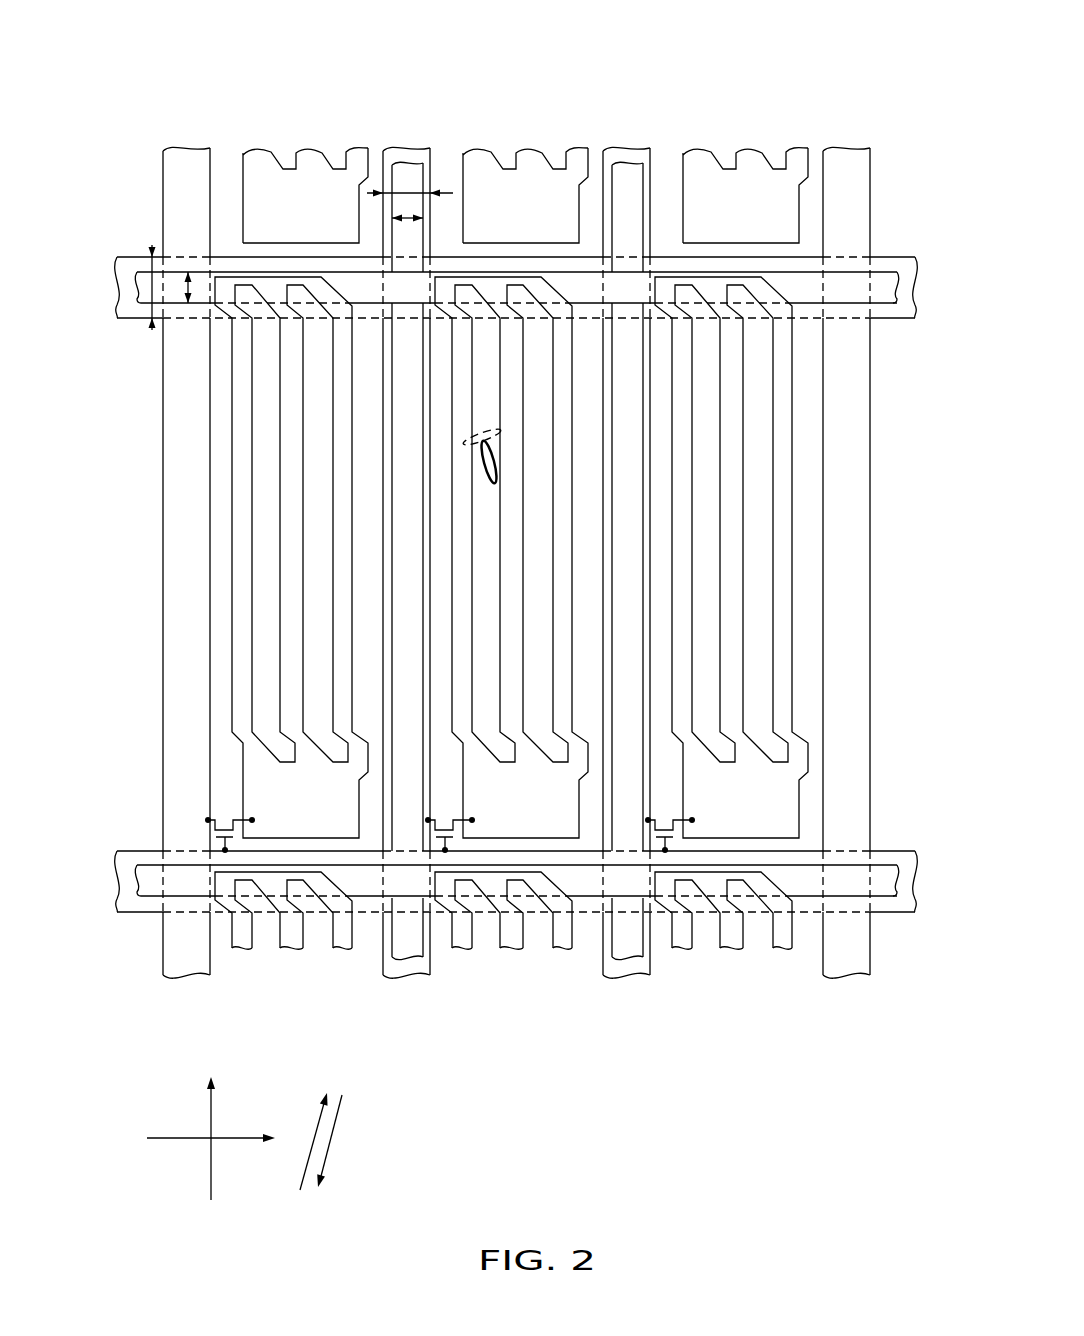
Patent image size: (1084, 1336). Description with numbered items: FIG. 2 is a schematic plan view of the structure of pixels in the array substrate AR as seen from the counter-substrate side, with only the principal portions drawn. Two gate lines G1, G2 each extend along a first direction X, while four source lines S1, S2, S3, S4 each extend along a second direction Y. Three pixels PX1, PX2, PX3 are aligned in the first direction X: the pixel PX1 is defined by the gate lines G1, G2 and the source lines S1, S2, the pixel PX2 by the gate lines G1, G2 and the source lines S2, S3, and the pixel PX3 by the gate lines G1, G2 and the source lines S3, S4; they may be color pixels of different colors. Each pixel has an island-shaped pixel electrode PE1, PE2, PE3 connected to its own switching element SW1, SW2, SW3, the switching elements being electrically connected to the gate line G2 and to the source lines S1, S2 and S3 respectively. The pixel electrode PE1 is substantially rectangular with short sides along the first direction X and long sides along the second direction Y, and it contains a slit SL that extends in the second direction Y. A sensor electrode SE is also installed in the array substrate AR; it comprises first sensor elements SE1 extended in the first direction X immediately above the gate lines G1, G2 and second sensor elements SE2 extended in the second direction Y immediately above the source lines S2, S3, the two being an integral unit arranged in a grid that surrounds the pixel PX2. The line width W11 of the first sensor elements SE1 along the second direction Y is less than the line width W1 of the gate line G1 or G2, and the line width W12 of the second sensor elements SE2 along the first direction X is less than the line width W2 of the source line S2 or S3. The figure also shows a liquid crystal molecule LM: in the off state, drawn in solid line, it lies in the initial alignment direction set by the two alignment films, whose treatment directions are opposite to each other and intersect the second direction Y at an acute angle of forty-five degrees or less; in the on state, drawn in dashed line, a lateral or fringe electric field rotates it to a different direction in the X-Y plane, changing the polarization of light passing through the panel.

The array substrate AR is at (776, 82).
The source line S1 is at (185, 150).
The source line S2 is at (405, 150).
The source line S3 is at (625, 150).
The source line S4 is at (845, 150).
The gate line G1 is at (136, 264).
The gate line G2 is at (136, 858).
The sensor electrode SE is at (898, 264).
The first sensor element SE1 is at (130, 284).
The second sensor element SE2 is at (402, 960).
The line width of gate line W1 is at (152, 328).
The line width of first sensor element W11 is at (188, 306).
The line width of source line W2 is at (432, 192).
The line width of second sensor element W12 is at (408, 216).
The pixel PX1 is at (235, 586).
The pixel PX2 is at (675, 586).
The pixel PX3 is at (785, 586).
The pixel electrode PE1 is at (327, 840).
The pixel electrode PE2 is at (547, 840).
The pixel electrode PE3 is at (767, 840).
The switching element SW1 is at (240, 852).
The switching element SW2 is at (460, 852).
The switching element SW3 is at (680, 852).
The slit SL is at (316, 540).
The liquid crystal molecule LM is at (470, 447).
The first direction X is at (222, 1137).
The second direction Y is at (211, 1122).